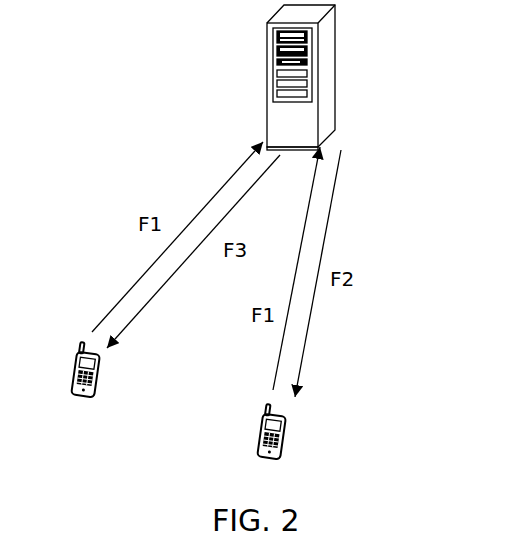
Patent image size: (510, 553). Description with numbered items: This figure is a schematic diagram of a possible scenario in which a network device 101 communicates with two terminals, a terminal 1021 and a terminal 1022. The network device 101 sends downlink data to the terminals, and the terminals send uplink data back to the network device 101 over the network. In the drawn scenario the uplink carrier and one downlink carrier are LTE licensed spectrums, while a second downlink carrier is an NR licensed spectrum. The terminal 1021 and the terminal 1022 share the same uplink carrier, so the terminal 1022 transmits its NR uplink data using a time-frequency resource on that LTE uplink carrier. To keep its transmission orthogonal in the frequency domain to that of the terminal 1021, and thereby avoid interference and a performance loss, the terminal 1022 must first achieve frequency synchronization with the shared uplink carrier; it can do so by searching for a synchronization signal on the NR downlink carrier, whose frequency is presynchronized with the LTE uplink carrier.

The network device 101 is at (327, 32).
The terminal 1021 is at (99, 392).
The terminal 1022 is at (286, 428).